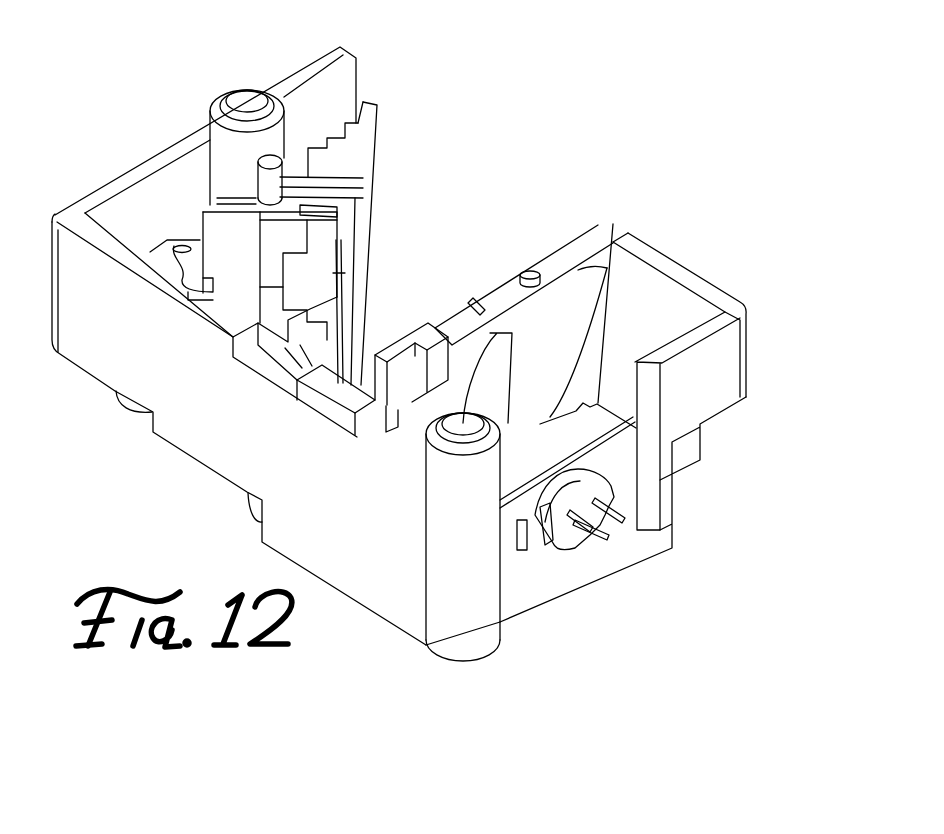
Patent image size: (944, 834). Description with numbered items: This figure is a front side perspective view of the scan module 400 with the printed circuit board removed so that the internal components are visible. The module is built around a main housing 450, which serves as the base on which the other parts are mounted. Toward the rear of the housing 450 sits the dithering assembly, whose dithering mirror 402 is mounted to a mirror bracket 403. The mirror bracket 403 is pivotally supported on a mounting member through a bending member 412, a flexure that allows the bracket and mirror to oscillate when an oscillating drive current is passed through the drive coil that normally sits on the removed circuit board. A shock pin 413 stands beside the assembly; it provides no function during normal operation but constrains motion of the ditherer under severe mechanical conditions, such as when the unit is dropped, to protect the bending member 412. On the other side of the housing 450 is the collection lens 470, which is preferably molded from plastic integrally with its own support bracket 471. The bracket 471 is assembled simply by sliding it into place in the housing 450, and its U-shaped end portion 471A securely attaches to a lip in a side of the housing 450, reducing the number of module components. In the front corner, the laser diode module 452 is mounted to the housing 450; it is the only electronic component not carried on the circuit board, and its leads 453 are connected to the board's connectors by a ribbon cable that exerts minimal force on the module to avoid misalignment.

The scan module 400 is at (468, 74).
The shock pin 413 is at (270, 162).
The dithering mirror 402 is at (370, 117).
The mirror bracket 403 is at (343, 175).
The bending member 412 is at (457, 307).
The U-shaped end portion 471A is at (407, 405).
The support bracket 471 is at (478, 298).
The collection lens 470 is at (578, 288).
The laser diode module 452 is at (567, 550).
The leads 453 is at (613, 527).
The main housing 450 is at (543, 608).